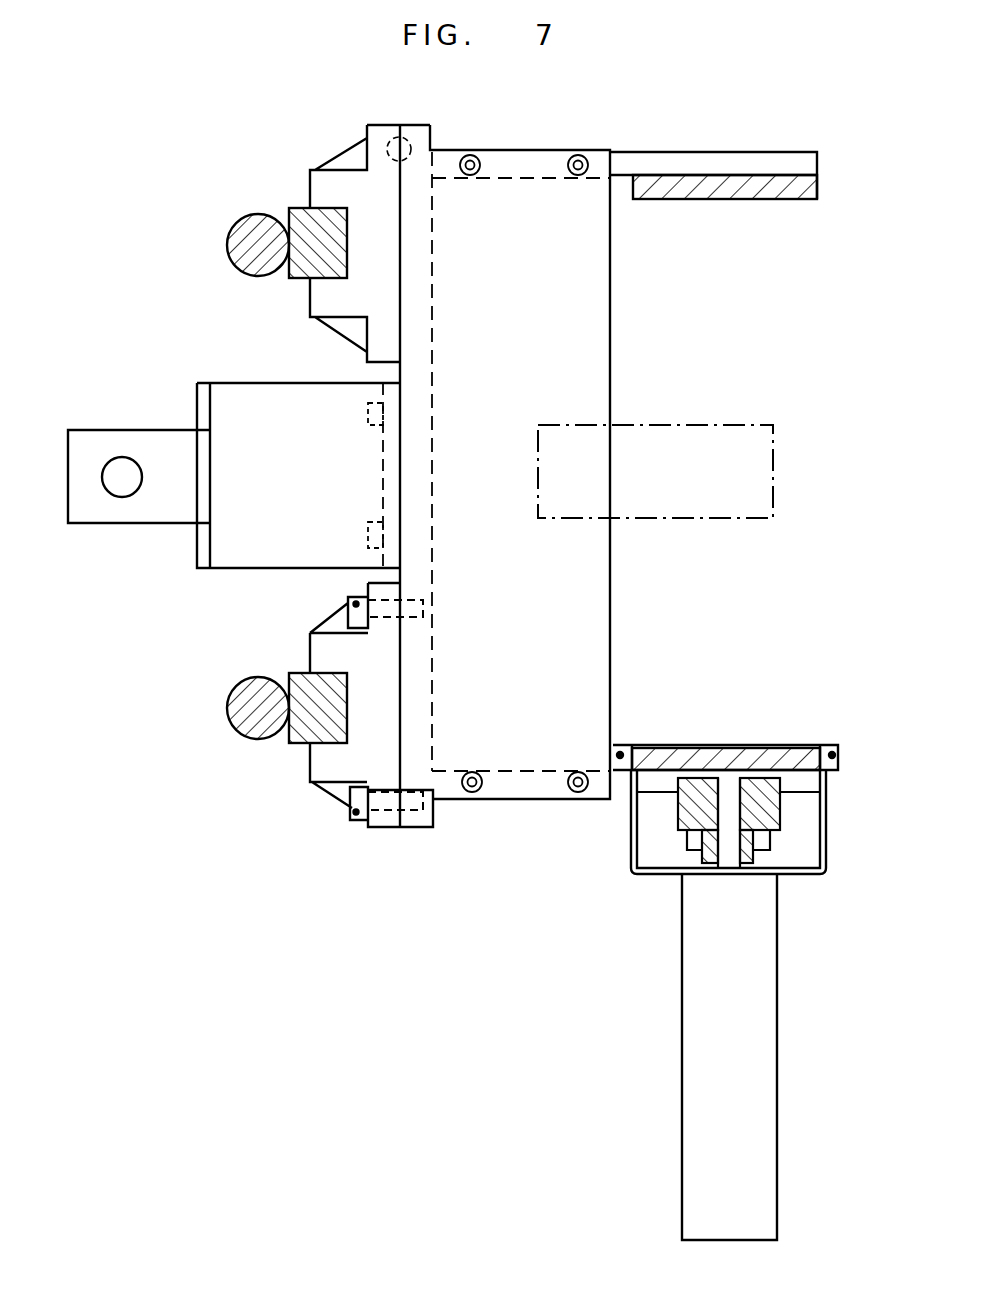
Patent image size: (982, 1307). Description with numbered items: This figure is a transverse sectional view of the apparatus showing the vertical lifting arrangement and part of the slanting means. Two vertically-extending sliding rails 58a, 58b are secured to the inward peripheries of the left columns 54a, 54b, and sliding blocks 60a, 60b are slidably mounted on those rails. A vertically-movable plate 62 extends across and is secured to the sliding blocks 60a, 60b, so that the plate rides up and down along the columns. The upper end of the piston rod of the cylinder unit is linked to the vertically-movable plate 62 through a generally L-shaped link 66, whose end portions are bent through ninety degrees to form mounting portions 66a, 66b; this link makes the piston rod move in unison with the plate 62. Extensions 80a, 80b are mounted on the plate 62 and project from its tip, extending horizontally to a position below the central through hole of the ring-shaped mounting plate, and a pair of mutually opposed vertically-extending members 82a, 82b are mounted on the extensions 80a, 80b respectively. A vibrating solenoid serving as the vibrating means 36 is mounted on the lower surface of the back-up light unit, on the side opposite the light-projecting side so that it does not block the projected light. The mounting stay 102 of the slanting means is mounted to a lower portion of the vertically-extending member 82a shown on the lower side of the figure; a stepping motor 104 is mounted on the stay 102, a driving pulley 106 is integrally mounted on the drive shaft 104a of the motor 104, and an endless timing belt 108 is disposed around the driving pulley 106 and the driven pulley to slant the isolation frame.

The vibrating means 36 is at (740, 427).
The left column 54a is at (245, 730).
The left column 54b is at (230, 250).
The sliding rail 58a is at (305, 727).
The sliding rail 58b is at (303, 225).
The sliding block 60a is at (387, 777).
The sliding block 60b is at (353, 187).
The vertically-movable plate 62 is at (527, 748).
The L-shaped link 66 is at (253, 542).
The mounting portion 66a is at (100, 510).
The mounting portion 66b is at (395, 465).
The extension 80a is at (650, 783).
The extension 80b is at (712, 160).
The vertically-extending member 82a is at (787, 747).
The vertically-extending member 82b is at (800, 192).
The mounting stay 102 is at (803, 875).
The motor 104 is at (765, 1103).
The drive shaft 104a is at (728, 787).
The driving pulley 106 is at (762, 802).
The endless timing belt 108 is at (677, 820).